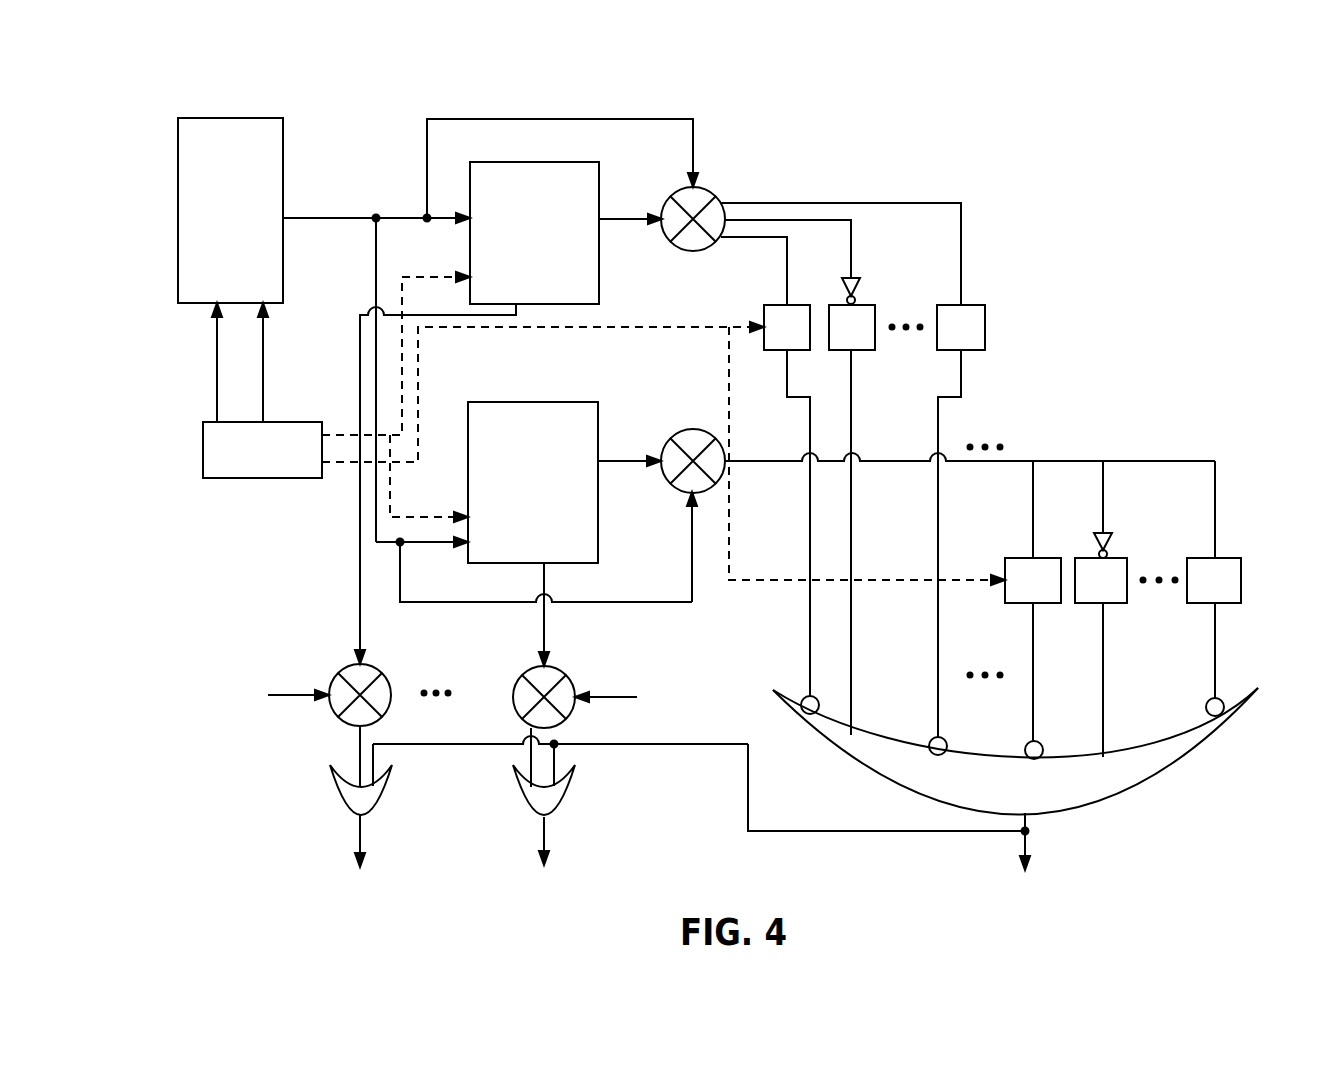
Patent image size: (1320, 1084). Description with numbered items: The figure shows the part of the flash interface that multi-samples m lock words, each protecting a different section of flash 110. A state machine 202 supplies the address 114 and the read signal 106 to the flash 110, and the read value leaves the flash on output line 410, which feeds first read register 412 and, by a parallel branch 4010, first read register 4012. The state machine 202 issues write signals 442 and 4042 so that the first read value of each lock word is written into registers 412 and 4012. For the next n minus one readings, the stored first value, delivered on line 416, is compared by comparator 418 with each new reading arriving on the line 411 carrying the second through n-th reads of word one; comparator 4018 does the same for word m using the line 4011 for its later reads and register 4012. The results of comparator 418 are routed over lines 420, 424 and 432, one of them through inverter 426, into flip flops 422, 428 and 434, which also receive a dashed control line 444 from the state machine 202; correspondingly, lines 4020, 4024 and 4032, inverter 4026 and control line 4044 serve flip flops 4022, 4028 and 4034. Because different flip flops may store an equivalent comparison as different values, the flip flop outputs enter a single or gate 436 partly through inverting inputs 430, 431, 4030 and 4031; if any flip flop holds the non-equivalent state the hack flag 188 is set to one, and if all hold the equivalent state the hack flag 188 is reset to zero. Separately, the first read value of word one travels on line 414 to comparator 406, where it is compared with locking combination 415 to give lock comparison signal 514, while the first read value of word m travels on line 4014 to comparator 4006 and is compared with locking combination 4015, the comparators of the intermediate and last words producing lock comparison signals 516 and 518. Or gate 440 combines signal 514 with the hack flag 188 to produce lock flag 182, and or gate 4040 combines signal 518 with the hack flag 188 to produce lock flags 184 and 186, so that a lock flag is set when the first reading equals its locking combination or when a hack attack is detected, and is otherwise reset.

The flash 110 is at (213, 118).
The address 114 is at (215, 342).
The read signal 106 is at (265, 342).
The state machine 202 is at (263, 480).
The flash output data line 410 is at (386, 214).
The 2,3,...n read of word 1 line 411 is at (678, 113).
The write signal 442 is at (425, 273).
The first read register 412 is at (537, 162).
The first read register 1 output line 416 is at (626, 214).
The comparator 418 is at (677, 248).
The XOR output line to R11 420 is at (787, 278).
The XOR output line to R21 424 is at (853, 253).
The inverter 426 is at (860, 287).
The XOR output line to Rn1 432 is at (962, 262).
The flip flop 422 is at (780, 352).
The flip flop 428 is at (863, 351).
The flip flop 434 is at (975, 351).
The register control line 444 is at (693, 329).
The first read register 4012 is at (545, 402).
The write signal 4042 is at (432, 513).
The flash output data line to register m 4010 is at (434, 545).
The 2,3,...n read of word m line 4011 is at (684, 605).
The comparator 4018 is at (675, 490).
The register control line for word m 4044 is at (772, 580).
The XOR output line to R1m 4020 is at (1033, 535).
The XOR output line to R2m 4024 is at (1105, 510).
The inverter for word m 4026 is at (1112, 542).
The XOR output line to Rnm 4032 is at (1217, 516).
The flip flop 4022 is at (1018, 605).
The flip flop 4028 is at (1113, 604).
The flip flop 4034 is at (1228, 604).
The inverting input bubble 430 is at (803, 695).
The inverting input bubble 431 is at (929, 737).
The inverting input bubble 4030 is at (1042, 742).
The inverting input bubble 4031 is at (1207, 700).
The "or" gate 436 is at (1110, 808).
The hack flag 188 is at (1030, 843).
The lock comparison signal 518 is at (527, 733).
The lock comparison signal 516 is at (419, 750).
The lock comparison signal 514 is at (348, 735).
The comparator 406 is at (374, 670).
The first read register 1 output to XOR 406 414 is at (358, 558).
The locking combination 415 is at (279, 694).
The comparator 4006 is at (511, 680).
The first read register m output to XOR 4006 4014 is at (542, 631).
The locking combination 4015 is at (627, 696).
The "or" gate 440 is at (391, 780).
The lock flag 182 is at (357, 832).
The "or" gate 4040 is at (520, 808).
The lock flag 184 is at (548, 832).
The lock flag 186 is at (605, 839).